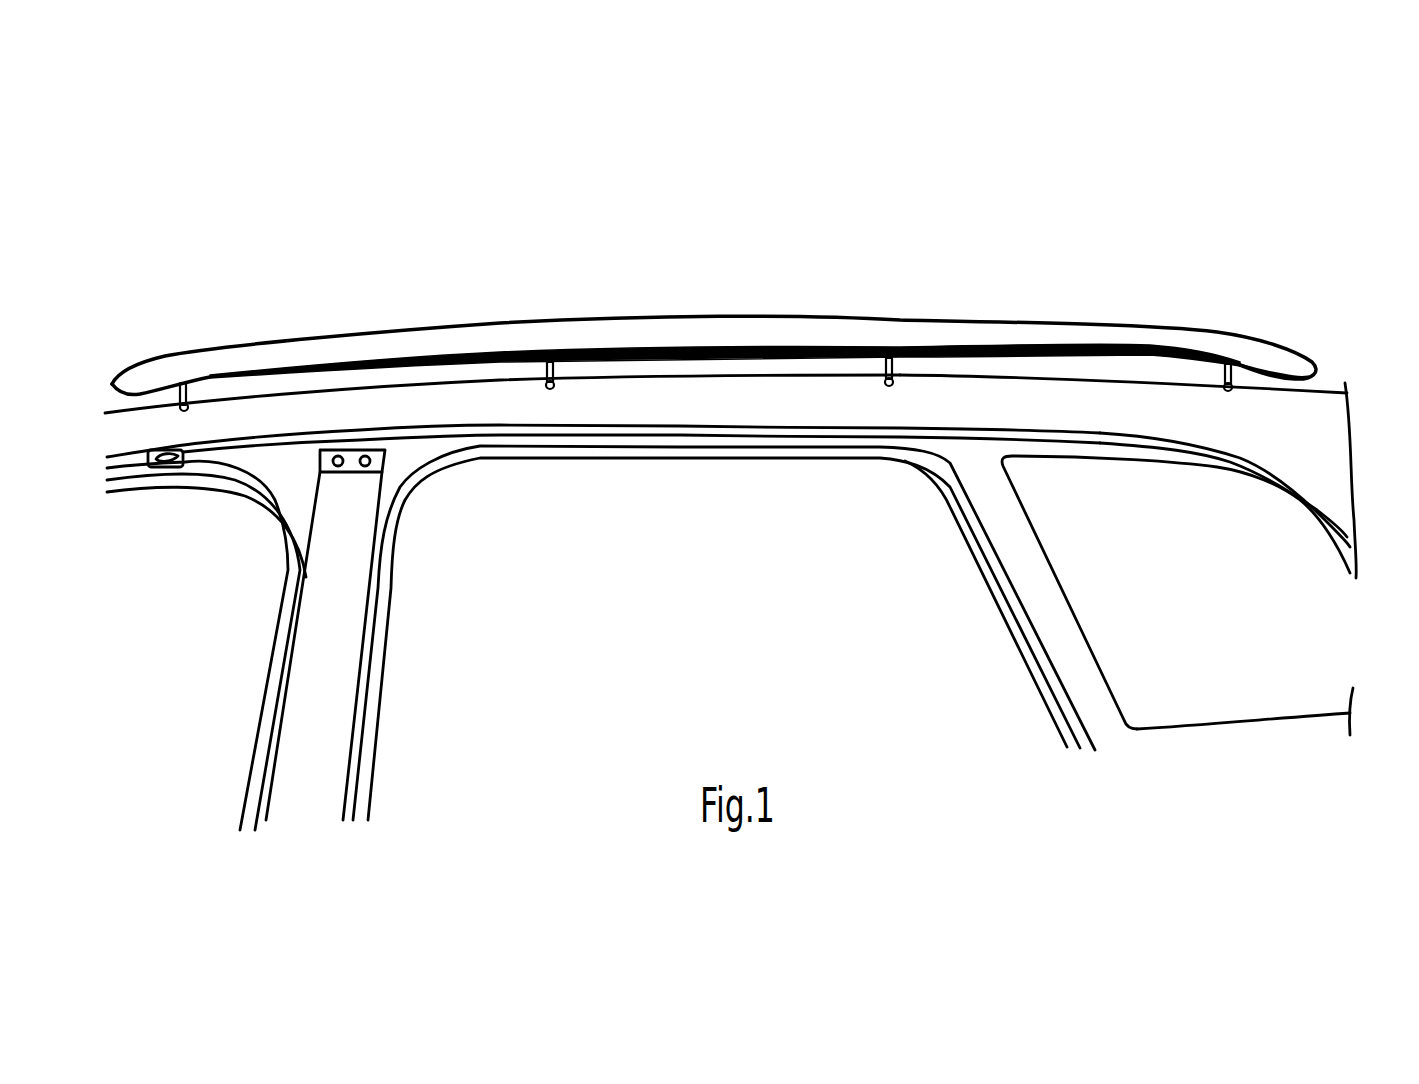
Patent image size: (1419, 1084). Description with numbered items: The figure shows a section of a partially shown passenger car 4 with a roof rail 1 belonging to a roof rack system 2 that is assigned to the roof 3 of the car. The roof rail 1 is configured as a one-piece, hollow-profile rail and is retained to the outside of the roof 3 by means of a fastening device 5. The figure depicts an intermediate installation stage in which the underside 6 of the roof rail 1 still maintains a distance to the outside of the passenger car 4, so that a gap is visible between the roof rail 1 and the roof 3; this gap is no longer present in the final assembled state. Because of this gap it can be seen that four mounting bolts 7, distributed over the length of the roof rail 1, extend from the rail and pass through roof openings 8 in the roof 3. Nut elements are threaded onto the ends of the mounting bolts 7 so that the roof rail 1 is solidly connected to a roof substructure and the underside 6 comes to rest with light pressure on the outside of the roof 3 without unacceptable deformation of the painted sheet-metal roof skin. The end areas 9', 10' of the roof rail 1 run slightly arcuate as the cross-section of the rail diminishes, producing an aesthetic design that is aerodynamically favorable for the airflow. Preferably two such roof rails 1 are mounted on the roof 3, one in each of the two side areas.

The roof rail 1 is at (874, 269).
The roof rack system 2 is at (1170, 280).
The roof 3 is at (1298, 436).
The passenger car 4 is at (1358, 516).
The fastening device 5 is at (962, 366).
The underside 6 is at (762, 364).
The mounting bolts 7 is at (200, 378).
The roof openings 8 is at (190, 410).
The end area 9' is at (159, 297).
The end area 10' is at (1293, 282).